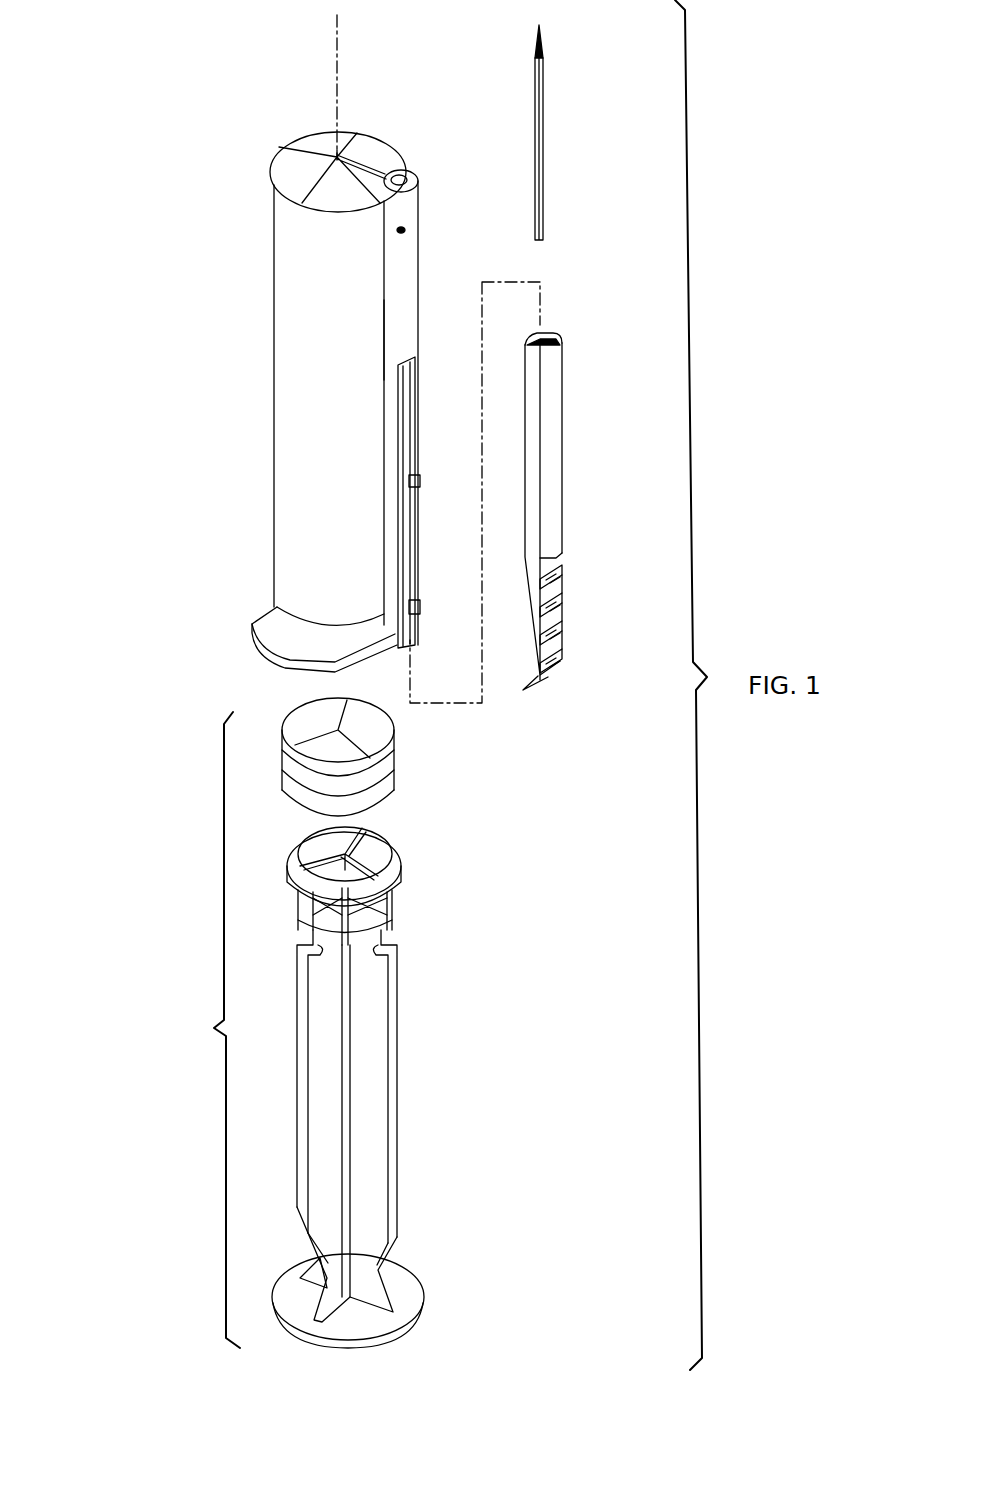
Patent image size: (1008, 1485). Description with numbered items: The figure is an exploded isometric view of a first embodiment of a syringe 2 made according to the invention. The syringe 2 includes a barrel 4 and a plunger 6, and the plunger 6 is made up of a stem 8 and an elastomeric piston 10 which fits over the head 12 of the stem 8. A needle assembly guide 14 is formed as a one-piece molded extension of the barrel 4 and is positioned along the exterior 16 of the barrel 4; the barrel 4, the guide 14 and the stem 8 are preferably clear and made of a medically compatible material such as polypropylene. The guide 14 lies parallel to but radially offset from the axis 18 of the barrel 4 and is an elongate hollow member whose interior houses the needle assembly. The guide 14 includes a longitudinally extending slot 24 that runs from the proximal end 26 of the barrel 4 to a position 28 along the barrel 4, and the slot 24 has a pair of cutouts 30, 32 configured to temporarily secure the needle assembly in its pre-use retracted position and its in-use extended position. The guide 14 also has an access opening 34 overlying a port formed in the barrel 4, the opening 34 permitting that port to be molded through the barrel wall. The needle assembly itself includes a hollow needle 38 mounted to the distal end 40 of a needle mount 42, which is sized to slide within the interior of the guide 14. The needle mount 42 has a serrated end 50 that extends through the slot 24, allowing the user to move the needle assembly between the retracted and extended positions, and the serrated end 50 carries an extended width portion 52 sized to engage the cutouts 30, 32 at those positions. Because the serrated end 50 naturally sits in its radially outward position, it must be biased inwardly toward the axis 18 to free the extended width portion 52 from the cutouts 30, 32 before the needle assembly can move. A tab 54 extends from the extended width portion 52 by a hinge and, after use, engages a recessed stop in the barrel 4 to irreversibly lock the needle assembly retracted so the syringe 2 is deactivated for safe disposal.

The syringe 2 is at (184, 169).
The barrel 4 is at (300, 488).
The plunger 6 is at (213, 1030).
The stem 8 is at (384, 1102).
The elastomeric piston 10 is at (384, 757).
The head 12 is at (400, 893).
The needle assembly guide 14 is at (438, 419).
The exterior 16 is at (372, 228).
The axis 18 is at (339, 62).
The slot 24 is at (416, 540).
The proximal end 26 is at (282, 620).
The position 28 is at (393, 337).
The cutout 30 is at (420, 606).
The cutout 32 is at (416, 480).
The access opening 34 is at (405, 230).
The hollow needle 38 is at (545, 122).
The distal end 40 is at (553, 348).
The needle mount 42 is at (578, 552).
The serrated end 50 is at (568, 588).
The extended width portion 52 is at (565, 672).
The tab 54 is at (540, 686).